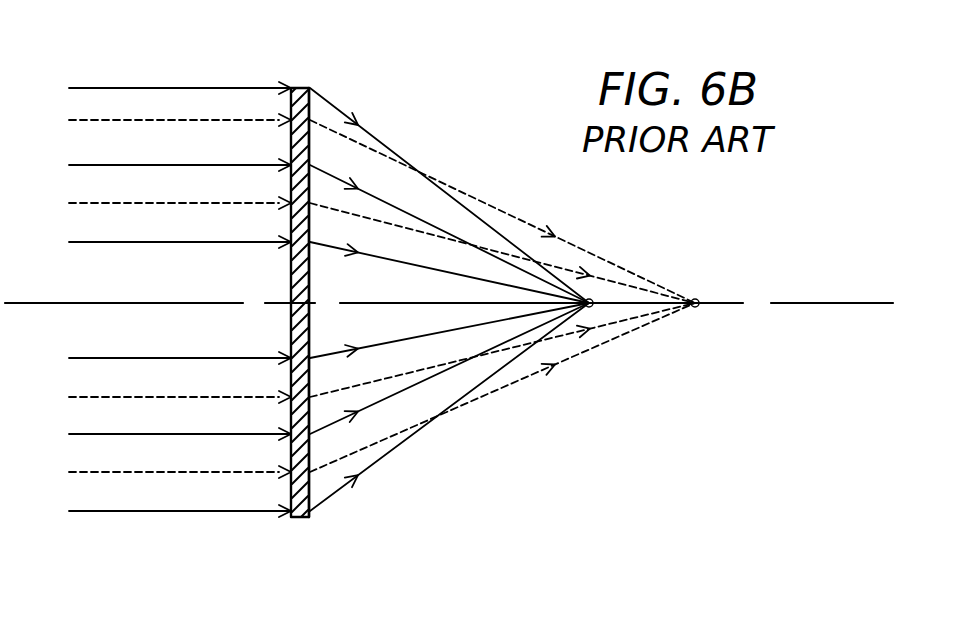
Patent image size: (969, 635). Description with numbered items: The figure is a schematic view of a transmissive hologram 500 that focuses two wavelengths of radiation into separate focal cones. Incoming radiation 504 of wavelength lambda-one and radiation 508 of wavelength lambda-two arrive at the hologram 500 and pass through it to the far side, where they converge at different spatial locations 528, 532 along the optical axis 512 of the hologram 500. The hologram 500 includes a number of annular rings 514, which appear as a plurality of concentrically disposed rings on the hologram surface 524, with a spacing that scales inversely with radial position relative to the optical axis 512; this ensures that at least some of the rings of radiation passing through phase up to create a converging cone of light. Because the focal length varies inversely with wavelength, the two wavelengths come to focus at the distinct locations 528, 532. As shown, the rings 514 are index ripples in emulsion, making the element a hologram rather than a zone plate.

The transmissive hologram 500 is at (322, 528).
The radiation 504 is at (250, 513).
The radiation 508 is at (85, 473).
The optical axis 512 is at (788, 306).
The annular rings 514 is at (303, 257).
The hologram surface 524 is at (310, 88).
The spatial location 528 is at (593, 299).
The spatial location 532 is at (699, 300).